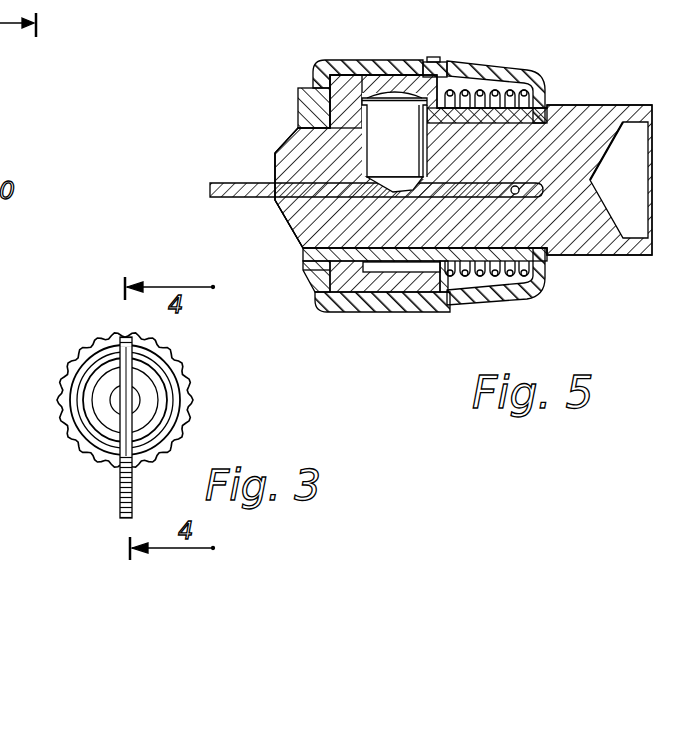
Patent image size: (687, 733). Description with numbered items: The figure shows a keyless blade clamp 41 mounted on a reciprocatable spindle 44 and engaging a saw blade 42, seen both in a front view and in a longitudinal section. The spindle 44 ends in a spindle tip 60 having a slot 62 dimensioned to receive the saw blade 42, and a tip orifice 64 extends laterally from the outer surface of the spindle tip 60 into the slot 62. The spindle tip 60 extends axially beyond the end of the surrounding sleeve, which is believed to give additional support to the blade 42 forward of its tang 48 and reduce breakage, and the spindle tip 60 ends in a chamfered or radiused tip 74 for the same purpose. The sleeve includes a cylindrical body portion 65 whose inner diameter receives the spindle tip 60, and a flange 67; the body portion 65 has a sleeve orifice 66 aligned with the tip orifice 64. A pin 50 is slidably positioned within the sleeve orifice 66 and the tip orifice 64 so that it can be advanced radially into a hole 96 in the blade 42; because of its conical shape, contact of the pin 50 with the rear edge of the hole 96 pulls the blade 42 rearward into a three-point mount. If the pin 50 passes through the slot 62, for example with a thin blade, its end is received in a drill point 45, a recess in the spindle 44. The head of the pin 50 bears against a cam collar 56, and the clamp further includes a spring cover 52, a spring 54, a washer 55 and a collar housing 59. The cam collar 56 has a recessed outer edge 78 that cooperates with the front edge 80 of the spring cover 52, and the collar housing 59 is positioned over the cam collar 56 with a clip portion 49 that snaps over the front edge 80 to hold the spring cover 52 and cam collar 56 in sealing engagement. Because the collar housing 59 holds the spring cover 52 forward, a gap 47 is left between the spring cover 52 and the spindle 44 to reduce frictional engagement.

In FIG. 5, the keyless blade clamp 41 is at (560, 84).
In FIG. 3, the keyless blade clamp 41 is at (210, 424).
In FIG. 5, the saw blade 42 is at (210, 189).
In FIG. 3, the saw blade 42 is at (120, 483).
In FIG. 5, the reciprocatable spindle 44 is at (612, 250).
In FIG. 5, the drill point 45 is at (388, 198).
In FIG. 5, the gap 47 is at (535, 268).
In FIG. 5, the tang 48 is at (291, 234).
In FIG. 5, the clip portion 49 is at (423, 300).
In FIG. 5, the pin 50 is at (408, 100).
In FIG. 5, the spring cover 52 is at (483, 298).
In FIG. 5, the spring 54 is at (507, 288).
In FIG. 5, the washer 55 is at (487, 72).
In FIG. 5, the cam collar 56 is at (350, 300).
In FIG. 5, the collar housing 59 is at (320, 313).
In FIG. 5, the spindle tip 60 is at (277, 206).
In FIG. 5, the slot 62 is at (288, 197).
In FIG. 5, the tip orifice 64 is at (385, 146).
In FIG. 5, the cylindrical body portion 65 is at (398, 228).
In FIG. 5, the sleeve orifice 66 is at (387, 105).
In FIG. 5, the flange 67 is at (308, 283).
In FIG. 5, the chamfered or radiused tip 74 is at (283, 182).
In FIG. 5, the recessed outer edge 78 is at (437, 58).
In FIG. 5, the front edge 80 is at (428, 292).
In FIG. 5, the hole 96 is at (380, 198).